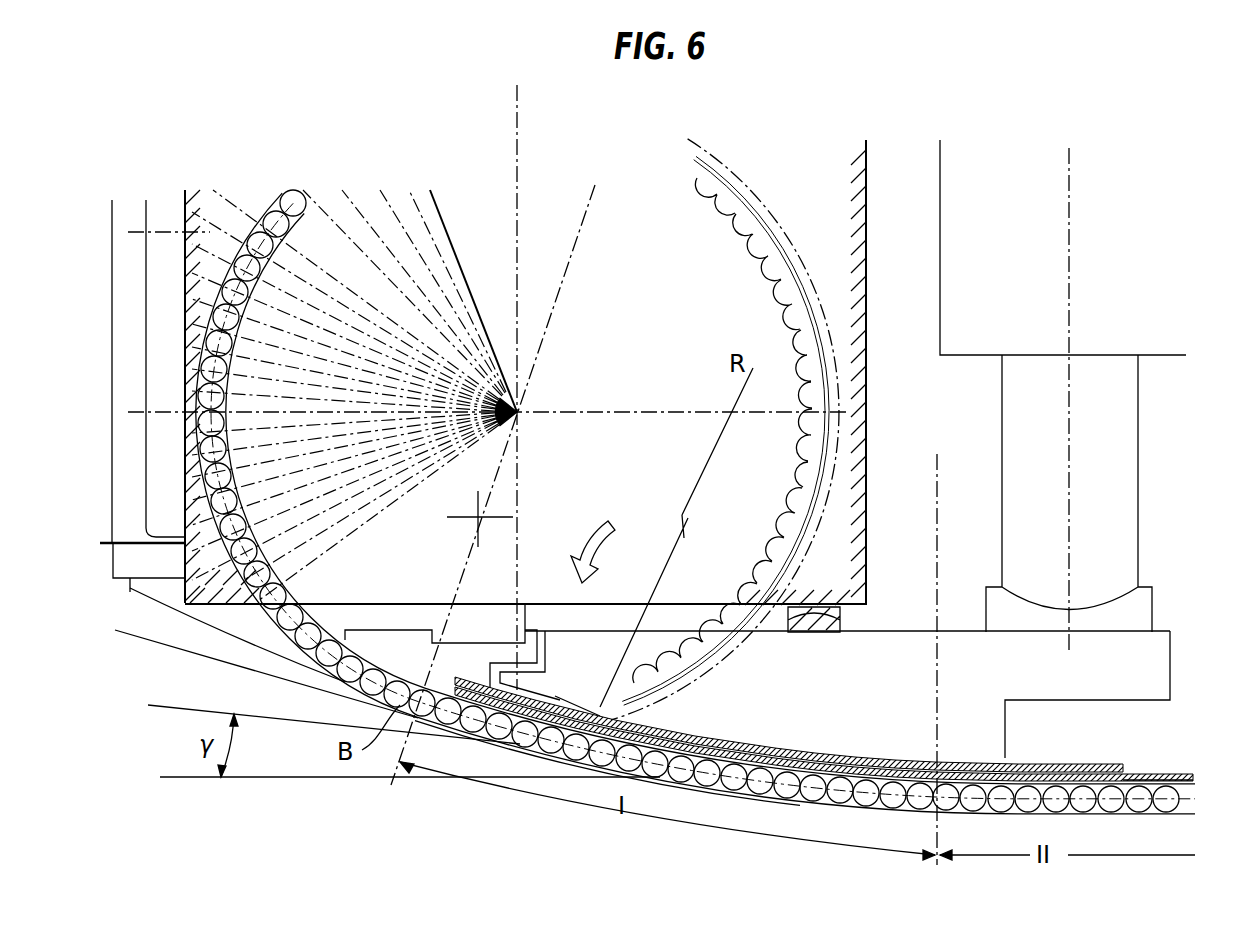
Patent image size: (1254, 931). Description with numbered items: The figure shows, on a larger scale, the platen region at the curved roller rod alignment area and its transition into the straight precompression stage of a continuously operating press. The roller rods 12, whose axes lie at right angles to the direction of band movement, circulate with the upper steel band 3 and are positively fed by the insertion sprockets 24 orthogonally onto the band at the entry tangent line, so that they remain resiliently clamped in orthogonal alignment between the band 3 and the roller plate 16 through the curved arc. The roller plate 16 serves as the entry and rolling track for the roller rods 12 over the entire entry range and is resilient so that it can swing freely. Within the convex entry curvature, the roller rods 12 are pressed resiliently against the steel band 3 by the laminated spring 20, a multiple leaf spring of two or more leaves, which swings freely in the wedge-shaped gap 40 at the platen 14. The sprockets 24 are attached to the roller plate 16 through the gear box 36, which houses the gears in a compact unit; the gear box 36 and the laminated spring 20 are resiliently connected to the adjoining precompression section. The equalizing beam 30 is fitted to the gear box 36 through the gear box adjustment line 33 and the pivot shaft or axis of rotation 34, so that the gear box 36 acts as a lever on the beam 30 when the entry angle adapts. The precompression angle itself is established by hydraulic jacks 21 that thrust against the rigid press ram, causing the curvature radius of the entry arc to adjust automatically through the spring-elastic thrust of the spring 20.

The steel band 3 is at (182, 648).
The roller rods 12 is at (258, 236).
The platen 14 is at (1002, 672).
The roller plate 16 is at (1160, 774).
The laminated spring 20 is at (826, 754).
The hydraulic jacks 21 is at (1000, 315).
The insertion sprockets 24 is at (713, 225).
The equalizing beam 30 is at (385, 655).
The gear box adjustment line 33 is at (485, 627).
The axis of rotation 34 is at (838, 622).
The gear box 36 is at (830, 241).
The wedge-shaped gap 40 is at (560, 695).